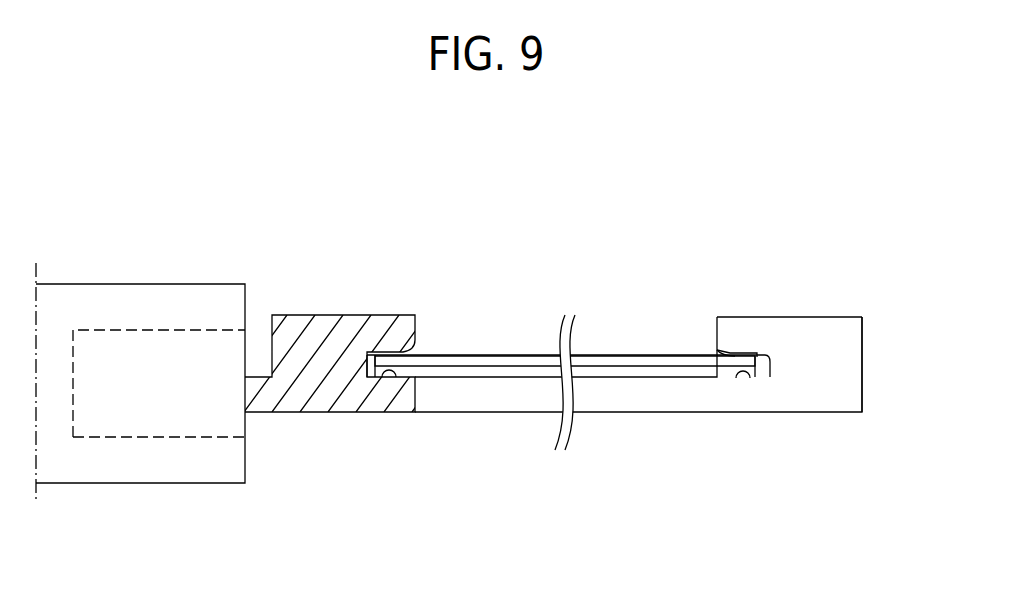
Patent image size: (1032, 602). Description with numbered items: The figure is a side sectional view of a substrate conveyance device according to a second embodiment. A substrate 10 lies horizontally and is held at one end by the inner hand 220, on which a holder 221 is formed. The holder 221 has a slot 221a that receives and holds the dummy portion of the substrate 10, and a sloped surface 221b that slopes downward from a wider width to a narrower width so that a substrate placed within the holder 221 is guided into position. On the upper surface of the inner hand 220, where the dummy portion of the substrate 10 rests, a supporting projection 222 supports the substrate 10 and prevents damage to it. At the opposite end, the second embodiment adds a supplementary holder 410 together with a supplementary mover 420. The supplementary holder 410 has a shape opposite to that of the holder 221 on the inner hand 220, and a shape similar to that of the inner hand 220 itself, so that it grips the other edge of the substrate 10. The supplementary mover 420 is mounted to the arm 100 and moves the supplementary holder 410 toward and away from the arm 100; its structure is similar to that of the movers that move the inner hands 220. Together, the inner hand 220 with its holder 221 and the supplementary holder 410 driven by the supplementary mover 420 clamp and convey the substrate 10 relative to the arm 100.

The arm 100 is at (173, 284).
The supplementary mover 420 is at (150, 425).
The supplementary holder 410 is at (347, 340).
The substrate 10 is at (495, 356).
The inner hand 220 is at (858, 316).
The holder 221 is at (823, 380).
The slot 221a is at (720, 357).
The sloped surface 221b is at (753, 352).
The supporting projection 222 is at (760, 380).